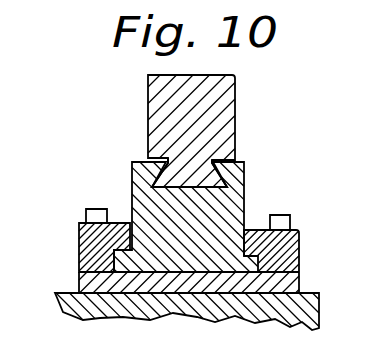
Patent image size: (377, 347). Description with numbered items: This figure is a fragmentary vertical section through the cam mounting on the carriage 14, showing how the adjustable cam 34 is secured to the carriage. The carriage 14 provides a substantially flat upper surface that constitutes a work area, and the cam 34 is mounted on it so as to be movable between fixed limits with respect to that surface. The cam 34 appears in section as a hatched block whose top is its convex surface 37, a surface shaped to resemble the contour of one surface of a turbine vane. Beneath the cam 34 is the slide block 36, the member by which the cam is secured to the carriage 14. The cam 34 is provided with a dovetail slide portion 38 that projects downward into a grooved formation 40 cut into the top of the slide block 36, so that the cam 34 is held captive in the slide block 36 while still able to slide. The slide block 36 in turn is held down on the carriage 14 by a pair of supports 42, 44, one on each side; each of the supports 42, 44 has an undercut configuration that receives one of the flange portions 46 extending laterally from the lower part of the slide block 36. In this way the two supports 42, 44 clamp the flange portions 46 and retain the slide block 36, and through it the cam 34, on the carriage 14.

The carriage 14 is at (308, 310).
The adjustable cam 34 is at (222, 116).
The slide block 36 is at (232, 203).
The convex surface 37 is at (195, 76).
The dovetail slide portion 38 is at (207, 176).
The grooved formation 40 is at (183, 182).
The support 42 is at (80, 243).
The support 44 is at (300, 251).
The flange portions 46 is at (118, 253).